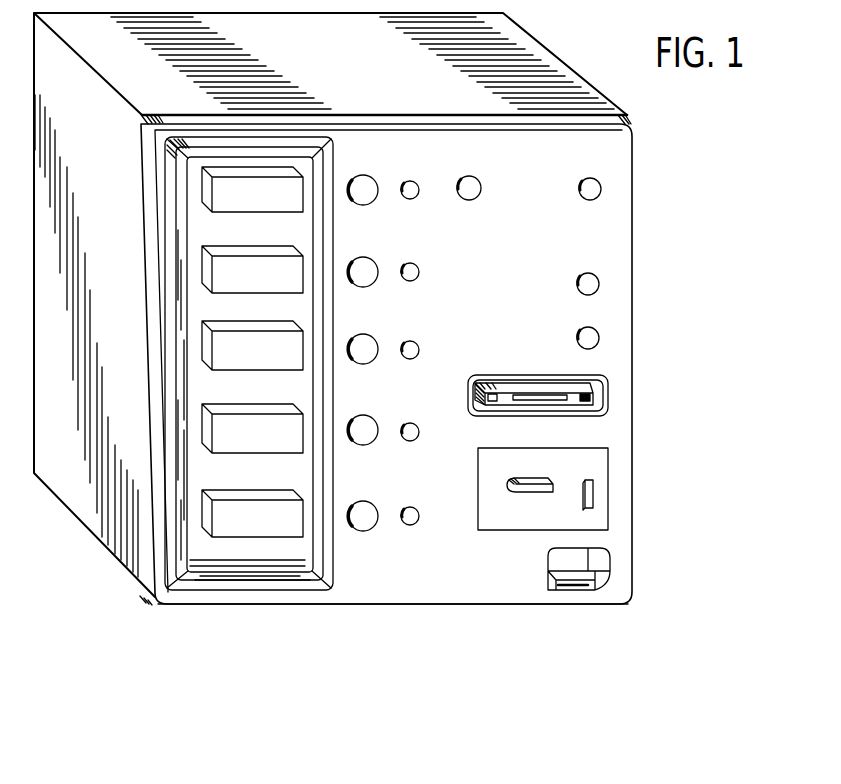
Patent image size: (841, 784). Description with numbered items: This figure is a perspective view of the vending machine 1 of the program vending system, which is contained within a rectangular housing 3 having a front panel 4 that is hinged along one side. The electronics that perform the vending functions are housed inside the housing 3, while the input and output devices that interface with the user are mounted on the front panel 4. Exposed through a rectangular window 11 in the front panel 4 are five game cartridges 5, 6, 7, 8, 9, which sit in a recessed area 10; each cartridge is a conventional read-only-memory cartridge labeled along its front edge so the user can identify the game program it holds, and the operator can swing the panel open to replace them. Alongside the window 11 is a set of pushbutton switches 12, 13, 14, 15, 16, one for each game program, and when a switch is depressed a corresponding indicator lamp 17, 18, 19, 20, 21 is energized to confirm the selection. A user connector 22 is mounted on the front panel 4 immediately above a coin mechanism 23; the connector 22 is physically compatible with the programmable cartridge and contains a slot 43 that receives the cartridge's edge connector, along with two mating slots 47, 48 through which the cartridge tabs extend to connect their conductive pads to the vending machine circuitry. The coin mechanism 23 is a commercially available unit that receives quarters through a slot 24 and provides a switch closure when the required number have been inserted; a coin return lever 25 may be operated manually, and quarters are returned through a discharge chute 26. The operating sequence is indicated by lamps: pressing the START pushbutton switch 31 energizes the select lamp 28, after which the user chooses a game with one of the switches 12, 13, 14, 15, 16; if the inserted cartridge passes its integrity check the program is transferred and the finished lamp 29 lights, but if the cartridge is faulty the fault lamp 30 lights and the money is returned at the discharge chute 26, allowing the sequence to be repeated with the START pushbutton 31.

The vending machine 1 is at (636, 207).
The rectangular housing 3 is at (360, 73).
The front panel 4 is at (453, 582).
The game cartridge 5 is at (226, 212).
The game cartridge 6 is at (226, 294).
The game cartridge 7 is at (226, 371).
The game cartridge 8 is at (228, 454).
The game cartridge 9 is at (226, 538).
The recessed area 10 is at (264, 552).
The rectangular window 11 is at (336, 568).
The pushbutton switch 12 is at (350, 180).
The pushbutton switch 13 is at (350, 262).
The pushbutton switch 14 is at (350, 339).
The pushbutton switch 15 is at (352, 419).
The pushbutton switch 16 is at (352, 505).
The indicator lamp 17 is at (412, 199).
The indicator lamp 18 is at (412, 281).
The indicator lamp 19 is at (412, 359).
The indicator lamp 20 is at (412, 441).
The indicator lamp 21 is at (412, 525).
The user connector 22 is at (574, 399).
The coin mechanism 23 is at (585, 489).
The slot 24 is at (593, 481).
The coin return lever 25 is at (542, 493).
The discharge chute 26 is at (600, 567).
The select lamp 28 is at (594, 178).
The finished lamp 29 is at (592, 274).
The fault lamp 30 is at (592, 328).
The START pushbutton switch 31 is at (472, 200).
The slot 43 is at (543, 400).
The mating slot 47 is at (591, 402).
The mating slot 48 is at (500, 393).